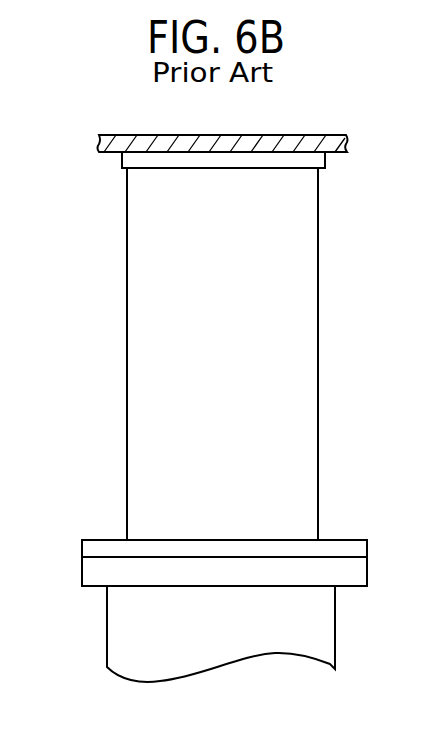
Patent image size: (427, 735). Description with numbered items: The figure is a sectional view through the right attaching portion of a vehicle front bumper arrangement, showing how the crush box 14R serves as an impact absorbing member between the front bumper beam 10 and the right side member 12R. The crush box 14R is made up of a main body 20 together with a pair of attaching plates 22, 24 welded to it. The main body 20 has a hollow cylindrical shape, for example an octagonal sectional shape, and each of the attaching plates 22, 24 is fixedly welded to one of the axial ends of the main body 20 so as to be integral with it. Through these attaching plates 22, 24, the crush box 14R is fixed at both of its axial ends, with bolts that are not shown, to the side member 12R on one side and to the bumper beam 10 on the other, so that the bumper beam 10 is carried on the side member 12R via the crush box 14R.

The front bumper beam 10 is at (197, 142).
The attaching plate 24 is at (285, 160).
The main body 20 is at (150, 367).
The attaching plate 22 is at (153, 548).
The right side member 12R is at (322, 630).
The crush box 14R is at (88, 281).